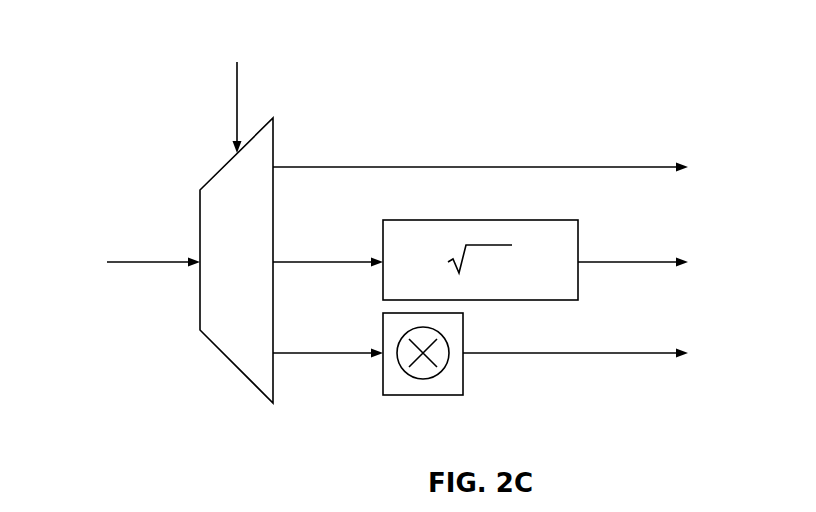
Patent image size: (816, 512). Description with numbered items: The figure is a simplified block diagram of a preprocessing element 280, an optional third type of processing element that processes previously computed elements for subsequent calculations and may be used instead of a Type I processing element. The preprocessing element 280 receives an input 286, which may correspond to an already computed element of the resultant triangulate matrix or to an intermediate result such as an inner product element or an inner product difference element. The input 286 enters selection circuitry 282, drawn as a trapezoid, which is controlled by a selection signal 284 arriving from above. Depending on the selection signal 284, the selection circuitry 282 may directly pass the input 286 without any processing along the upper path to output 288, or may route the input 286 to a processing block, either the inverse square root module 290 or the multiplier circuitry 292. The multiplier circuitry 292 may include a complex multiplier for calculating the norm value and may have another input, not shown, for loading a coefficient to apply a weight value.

The preprocessing element 280 is at (153, 30).
The selection circuitry 282 is at (257, 126).
The selection signal 284 is at (233, 110).
The input 286 is at (153, 262).
The pass-through output 288 is at (480, 167).
The inverse square root module 290 is at (482, 218).
The multiplier circuitry 292 is at (420, 396).